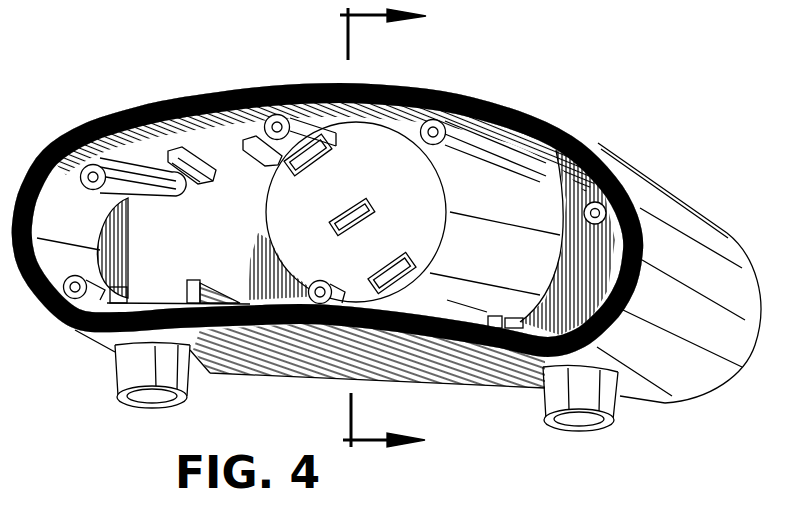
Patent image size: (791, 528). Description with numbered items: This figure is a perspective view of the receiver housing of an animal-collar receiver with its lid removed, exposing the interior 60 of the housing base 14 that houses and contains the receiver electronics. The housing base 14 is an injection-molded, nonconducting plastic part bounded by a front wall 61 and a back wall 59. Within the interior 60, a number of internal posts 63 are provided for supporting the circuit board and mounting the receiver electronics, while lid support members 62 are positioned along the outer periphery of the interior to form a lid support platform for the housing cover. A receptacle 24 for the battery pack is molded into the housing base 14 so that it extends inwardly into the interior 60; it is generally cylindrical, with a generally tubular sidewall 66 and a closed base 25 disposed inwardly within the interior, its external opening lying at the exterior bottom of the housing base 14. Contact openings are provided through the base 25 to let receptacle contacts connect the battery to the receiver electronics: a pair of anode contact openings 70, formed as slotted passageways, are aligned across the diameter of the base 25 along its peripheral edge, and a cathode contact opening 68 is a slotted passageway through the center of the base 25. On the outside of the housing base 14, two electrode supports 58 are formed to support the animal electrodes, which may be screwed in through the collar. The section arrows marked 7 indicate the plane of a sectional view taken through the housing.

The section line 7- 7 is at (383, 244).
The housing base 14 is at (677, 214).
The receptacle 24 is at (515, 203).
The closed base 25 is at (400, 157).
The electrode supports 58 is at (197, 383).
The back wall 59 is at (273, 356).
The interior 60 is at (84, 229).
The front wall 61 is at (133, 122).
The lid support members 62 is at (276, 116).
The internal posts 63 is at (186, 150).
The tubular sidewall 66 is at (490, 190).
The cathode contact opening 68 is at (368, 200).
The anode contact openings 70 is at (302, 148).